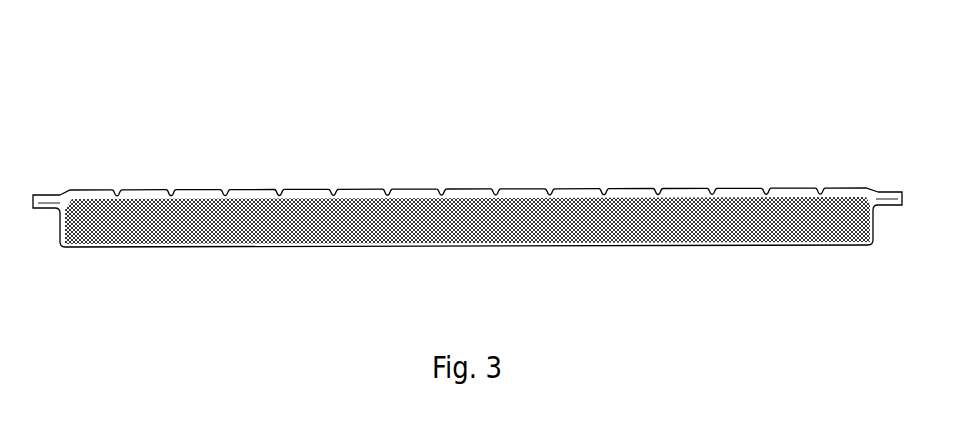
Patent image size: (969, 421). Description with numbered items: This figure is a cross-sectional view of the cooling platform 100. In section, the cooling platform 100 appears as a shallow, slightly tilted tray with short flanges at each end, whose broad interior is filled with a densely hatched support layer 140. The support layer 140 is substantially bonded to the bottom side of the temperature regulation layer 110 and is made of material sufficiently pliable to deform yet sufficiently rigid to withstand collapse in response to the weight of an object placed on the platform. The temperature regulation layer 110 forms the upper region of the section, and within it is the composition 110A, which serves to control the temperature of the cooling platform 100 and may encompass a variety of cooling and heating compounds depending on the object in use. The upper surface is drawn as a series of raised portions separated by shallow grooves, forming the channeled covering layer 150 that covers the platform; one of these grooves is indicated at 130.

The cooling platform 100 is at (78, 41).
The temperature regulation layer 110 is at (740, 193).
The composition 110A is at (796, 194).
The groove 130 is at (438, 192).
The support layer 140 is at (145, 220).
The channeled covering layer 150 is at (628, 189).